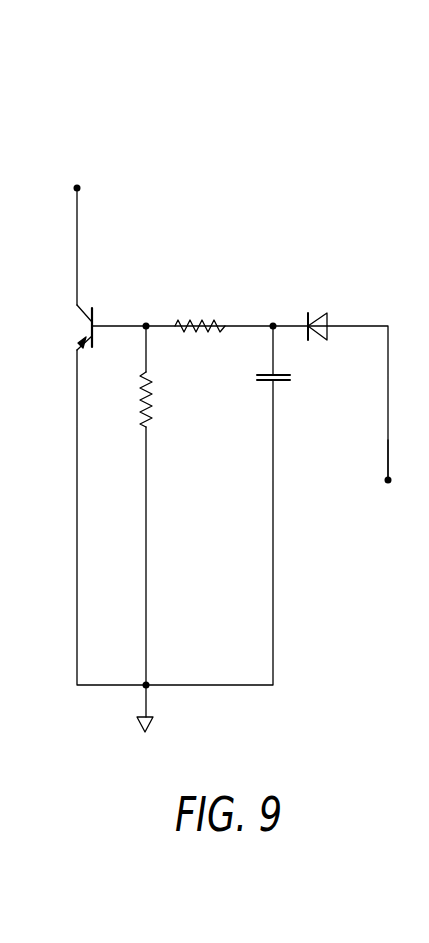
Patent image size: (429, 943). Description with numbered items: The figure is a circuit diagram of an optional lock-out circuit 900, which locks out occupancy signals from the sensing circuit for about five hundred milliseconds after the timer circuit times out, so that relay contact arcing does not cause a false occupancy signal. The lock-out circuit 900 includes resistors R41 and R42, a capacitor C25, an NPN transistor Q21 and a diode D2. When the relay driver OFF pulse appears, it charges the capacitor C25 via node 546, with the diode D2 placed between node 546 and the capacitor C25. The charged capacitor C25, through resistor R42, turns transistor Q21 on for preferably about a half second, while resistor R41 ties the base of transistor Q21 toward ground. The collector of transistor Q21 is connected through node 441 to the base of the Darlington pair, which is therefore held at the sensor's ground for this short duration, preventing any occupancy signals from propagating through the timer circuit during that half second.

The lock-out circuit 900 is at (277, 132).
The node 441 is at (78, 188).
The NPN transistor Q21 is at (82, 330).
The resistor R42 is at (201, 322).
The resistor R41 is at (152, 390).
The diode D2 is at (320, 313).
The capacitor C25 is at (293, 375).
The node 546 is at (386, 483).